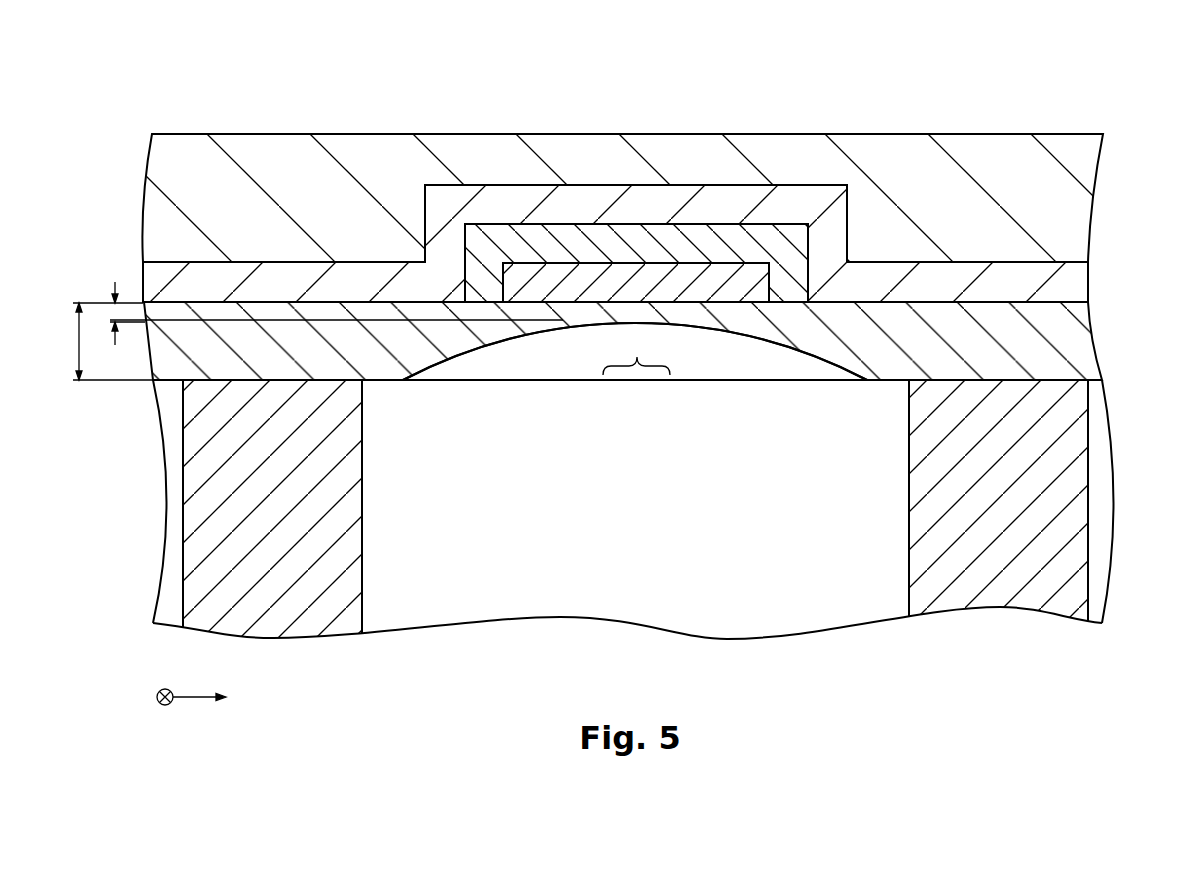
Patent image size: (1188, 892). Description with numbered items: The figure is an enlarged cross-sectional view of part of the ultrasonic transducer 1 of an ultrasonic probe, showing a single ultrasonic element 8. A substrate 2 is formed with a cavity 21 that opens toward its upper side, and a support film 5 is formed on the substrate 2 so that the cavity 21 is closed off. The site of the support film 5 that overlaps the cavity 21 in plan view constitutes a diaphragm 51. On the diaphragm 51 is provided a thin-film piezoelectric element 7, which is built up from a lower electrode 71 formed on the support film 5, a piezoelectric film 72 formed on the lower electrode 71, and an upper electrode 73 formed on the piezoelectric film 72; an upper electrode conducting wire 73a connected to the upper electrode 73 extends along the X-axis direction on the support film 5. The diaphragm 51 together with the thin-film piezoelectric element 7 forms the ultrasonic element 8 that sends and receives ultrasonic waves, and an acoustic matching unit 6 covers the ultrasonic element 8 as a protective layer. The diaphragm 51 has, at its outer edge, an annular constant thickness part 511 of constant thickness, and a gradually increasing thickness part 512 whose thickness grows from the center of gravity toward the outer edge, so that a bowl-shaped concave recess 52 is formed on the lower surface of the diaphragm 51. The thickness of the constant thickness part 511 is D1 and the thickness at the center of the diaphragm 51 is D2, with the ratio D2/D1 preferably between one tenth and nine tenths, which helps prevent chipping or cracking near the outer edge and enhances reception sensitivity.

The ultrasonic transducer 1 is at (1055, 82).
The substrate 2 is at (657, 537).
The cavity 21 is at (760, 627).
The support film 5 is at (1080, 320).
The diaphragm 51 is at (907, 452).
The constant thickness part 511 is at (367, 398).
The gradually increasing thickness part 512 is at (865, 398).
The recess 52 is at (802, 363).
The acoustic matching unit 6 is at (1077, 175).
The thin-film piezoelectric element 7 is at (616, 158).
The lower electrode 71 is at (636, 192).
The piezoelectric film 72 is at (650, 243).
The upper electrode 73 is at (710, 203).
The upper electrode conducting wire 73a is at (150, 278).
The ultrasonic element 8 is at (835, 177).
The thickness of the constant thickness parts D1 is at (94, 341).
The thickness of the center-of-gravity position D2 is at (113, 307).